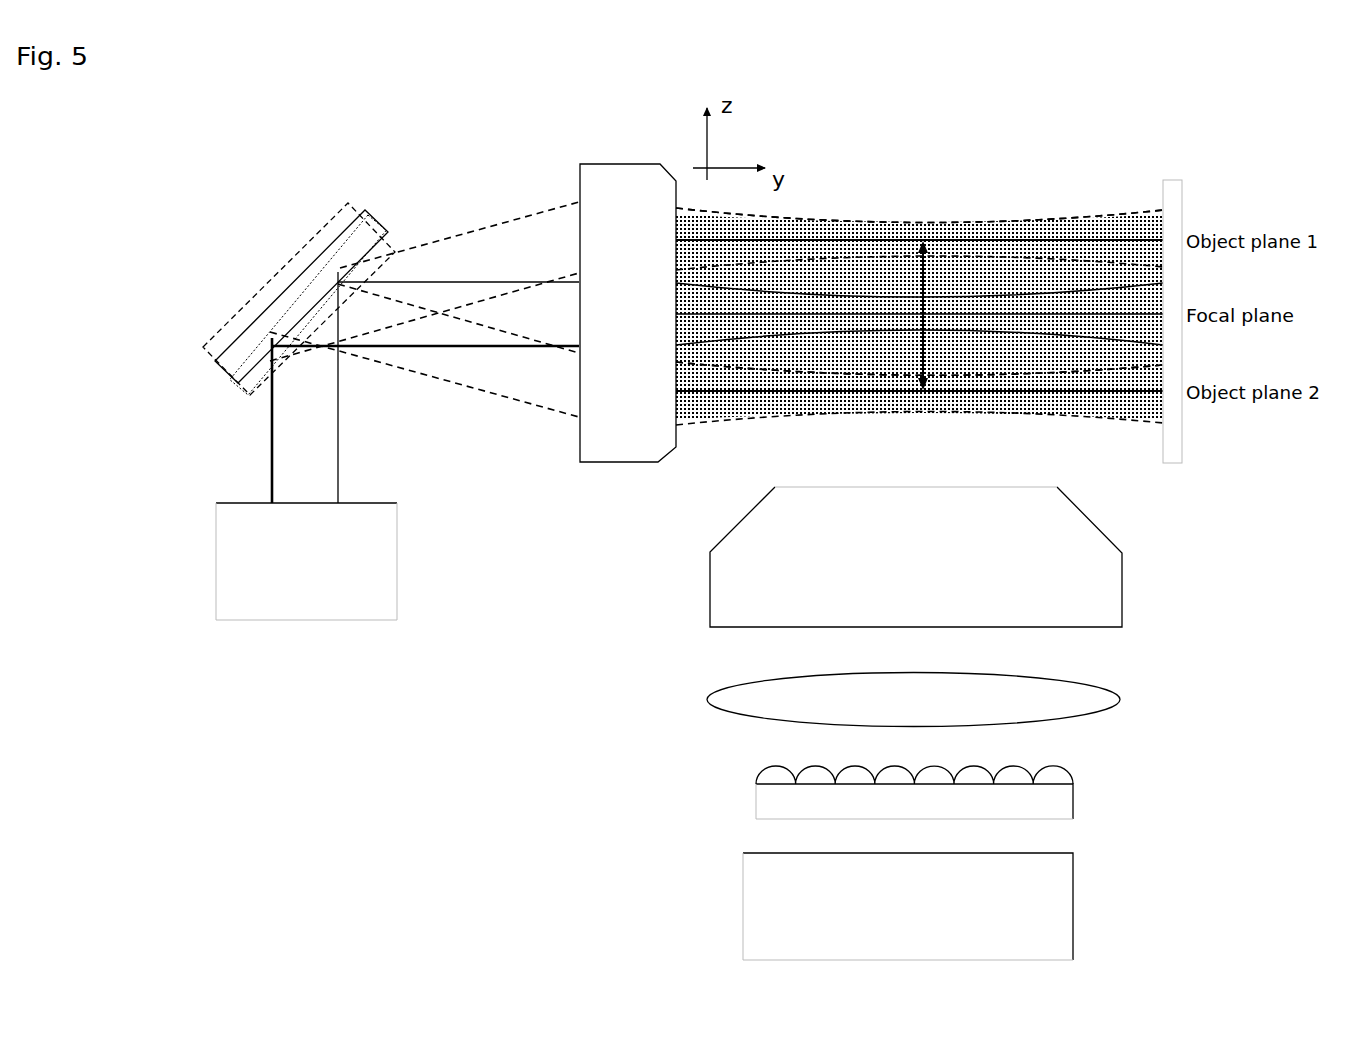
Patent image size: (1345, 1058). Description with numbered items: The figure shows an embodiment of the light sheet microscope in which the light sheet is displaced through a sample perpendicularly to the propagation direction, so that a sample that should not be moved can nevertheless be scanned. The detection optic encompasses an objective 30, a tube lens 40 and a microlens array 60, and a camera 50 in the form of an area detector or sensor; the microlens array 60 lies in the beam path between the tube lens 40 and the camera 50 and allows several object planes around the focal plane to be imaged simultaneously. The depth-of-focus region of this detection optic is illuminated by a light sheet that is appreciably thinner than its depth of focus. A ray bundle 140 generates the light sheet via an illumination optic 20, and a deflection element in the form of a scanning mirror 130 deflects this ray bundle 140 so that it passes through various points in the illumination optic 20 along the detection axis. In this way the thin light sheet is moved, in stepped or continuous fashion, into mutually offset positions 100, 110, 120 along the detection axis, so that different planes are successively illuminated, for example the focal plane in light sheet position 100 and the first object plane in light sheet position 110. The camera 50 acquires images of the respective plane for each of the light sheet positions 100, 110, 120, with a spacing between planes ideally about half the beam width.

The illumination optic 20 is at (640, 463).
The detection optic 30 is at (730, 551).
The tube lens 40 is at (720, 702).
The camera 50 is at (770, 888).
The microlens array 60 is at (770, 802).
The light sheet position 100 is at (1027, 295).
The light sheet position 110 is at (1066, 218).
The light sheet position 120 is at (1113, 367).
The scanning mirror 130 is at (342, 218).
The ray bundle 140 is at (306, 473).